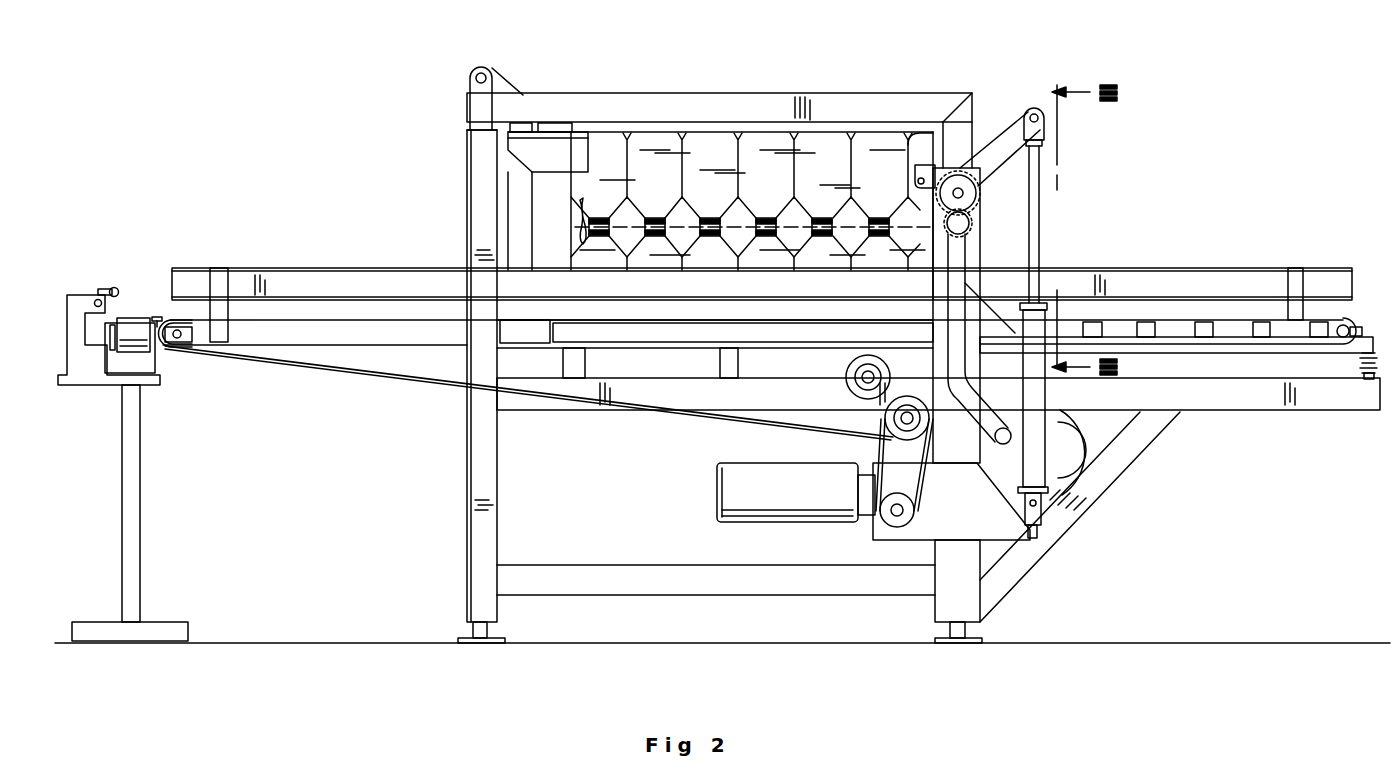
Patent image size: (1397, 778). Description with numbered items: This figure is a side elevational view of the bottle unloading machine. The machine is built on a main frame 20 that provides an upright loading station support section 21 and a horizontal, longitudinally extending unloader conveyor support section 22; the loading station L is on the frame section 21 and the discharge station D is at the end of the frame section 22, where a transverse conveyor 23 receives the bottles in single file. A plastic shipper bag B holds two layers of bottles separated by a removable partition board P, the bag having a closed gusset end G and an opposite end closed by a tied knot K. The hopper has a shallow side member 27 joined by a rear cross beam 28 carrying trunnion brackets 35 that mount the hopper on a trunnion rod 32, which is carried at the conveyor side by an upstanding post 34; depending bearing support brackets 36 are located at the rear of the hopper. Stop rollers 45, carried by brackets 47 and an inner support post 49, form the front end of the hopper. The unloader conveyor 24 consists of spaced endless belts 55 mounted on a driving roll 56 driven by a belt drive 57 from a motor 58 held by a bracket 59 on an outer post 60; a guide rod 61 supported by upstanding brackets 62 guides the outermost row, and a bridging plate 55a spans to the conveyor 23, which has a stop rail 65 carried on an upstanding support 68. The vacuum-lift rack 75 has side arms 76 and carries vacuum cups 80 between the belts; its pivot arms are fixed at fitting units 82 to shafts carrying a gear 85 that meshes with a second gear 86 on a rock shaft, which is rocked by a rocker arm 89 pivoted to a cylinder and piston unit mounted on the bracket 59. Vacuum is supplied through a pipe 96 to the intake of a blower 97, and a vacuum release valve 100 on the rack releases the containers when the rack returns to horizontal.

The main frame 20 is at (467, 435).
The loading station support section 21 is at (818, 98).
The unloader conveyor support section 22 is at (524, 400).
The conveyor 23 is at (137, 322).
The unloader conveyor 24 is at (366, 292).
The side member 27 is at (562, 150).
The rear cross beam 28 is at (518, 127).
The trunnion rod 32 is at (487, 72).
The upstanding post 34 is at (477, 158).
The trunnion brackets 35 is at (508, 88).
The bearing support brackets 36 is at (548, 318).
The stop rollers 45 is at (915, 170).
The brackets 47 is at (924, 176).
The inner support post 49 is at (962, 112).
The endless belts 55 is at (330, 372).
The bridging plate 55a is at (157, 316).
The driving roll 56 is at (884, 419).
The belt drive 57 is at (882, 447).
The motor 58 is at (796, 492).
The bracket 59 is at (951, 501).
The outer post 60 is at (975, 251).
The guide rod 61 is at (1232, 280).
The upstanding brackets 62 is at (226, 278).
The stop rail 65 is at (113, 287).
The upstanding support 68 is at (75, 357).
The vacuum-lift rack 75 is at (1348, 334).
The side arms 76 is at (1222, 346).
The vacuum cups 80 is at (1135, 322).
The fitting units 82 is at (972, 272).
The gear 85 is at (974, 225).
The second gear 86 is at (980, 193).
The rocker arm 89 is at (1012, 124).
The pipe 96 is at (962, 298).
The blower 97 is at (1092, 452).
The vacuum release valve 100 is at (1362, 360).
The shipper bag B is at (767, 128).
The discharge station D is at (166, 347).
The gusset end G is at (918, 132).
The tied knot K is at (555, 218).
The loading station L is at (648, 150).
The partition board P is at (742, 222).